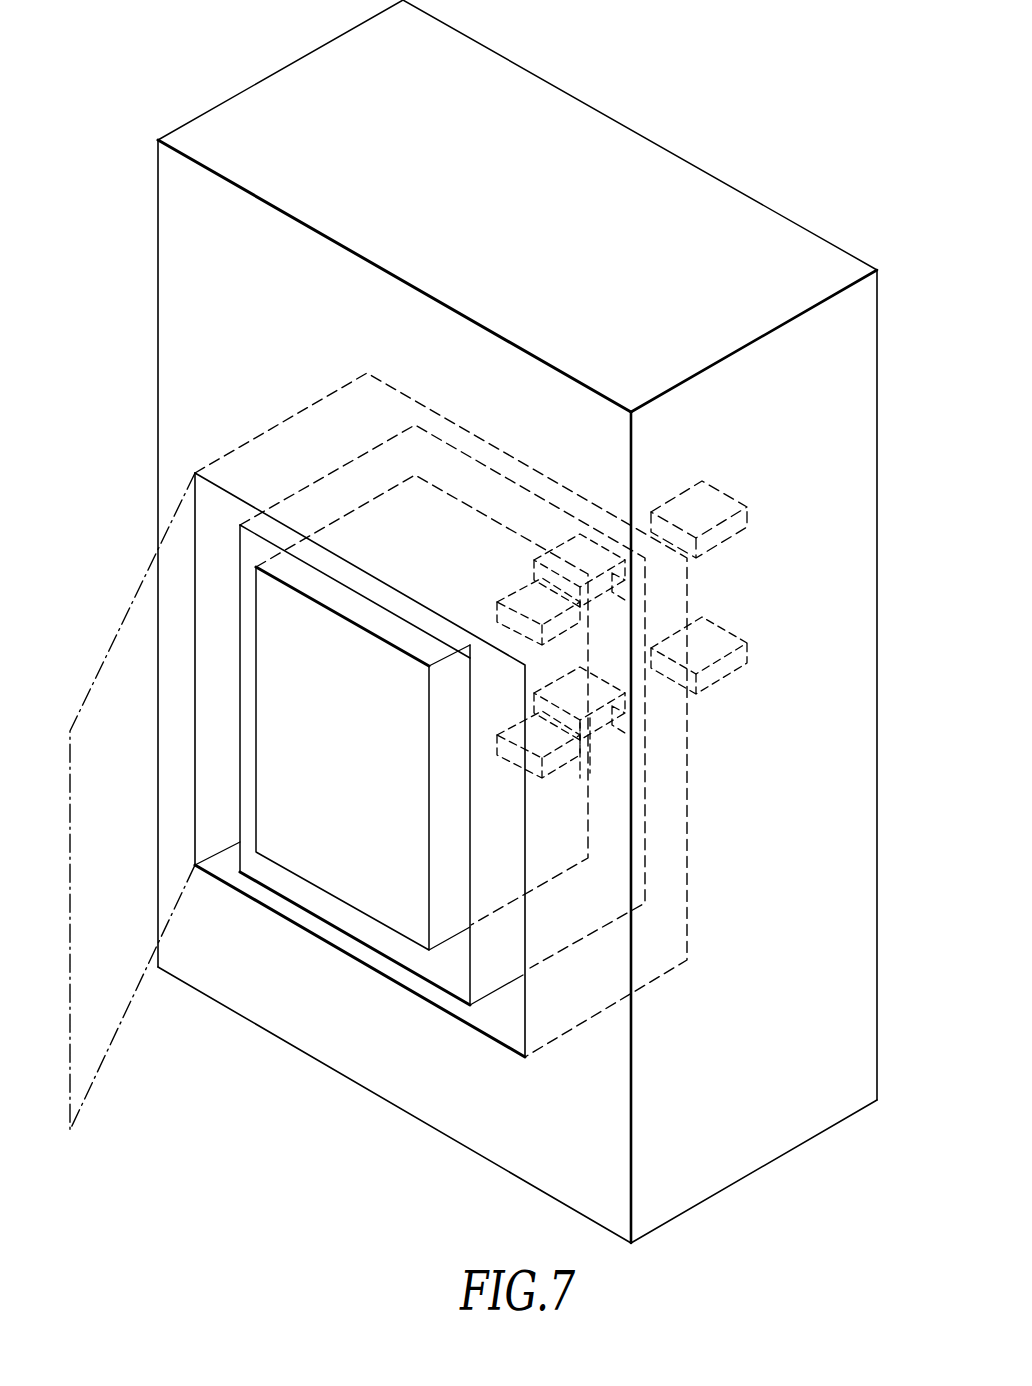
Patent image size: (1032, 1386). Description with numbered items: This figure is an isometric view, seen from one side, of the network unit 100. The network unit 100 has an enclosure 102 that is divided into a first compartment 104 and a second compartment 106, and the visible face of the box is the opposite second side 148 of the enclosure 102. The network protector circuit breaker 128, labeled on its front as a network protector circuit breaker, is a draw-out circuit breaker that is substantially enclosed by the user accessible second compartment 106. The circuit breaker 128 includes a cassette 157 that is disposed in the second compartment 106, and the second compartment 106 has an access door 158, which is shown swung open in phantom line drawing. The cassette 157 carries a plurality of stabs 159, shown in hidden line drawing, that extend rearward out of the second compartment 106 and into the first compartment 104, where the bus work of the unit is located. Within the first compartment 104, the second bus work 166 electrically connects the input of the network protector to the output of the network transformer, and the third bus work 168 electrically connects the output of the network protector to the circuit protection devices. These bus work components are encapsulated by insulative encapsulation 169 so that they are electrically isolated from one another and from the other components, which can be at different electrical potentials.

The network unit 100 is at (122, 224).
The enclosure 102 is at (699, 152).
The first compartment 104 is at (276, 1006).
The second compartment 106 is at (658, 978).
The circuit breaker 128 is at (292, 875).
The opposite second side 148 is at (467, 1122).
The cassette 157 is at (397, 964).
The access door 158 is at (112, 637).
The stabs 159 is at (560, 548).
The second bus work 166 is at (717, 647).
The third bus work 168 is at (703, 503).
The insulative encapsulation 169 is at (736, 590).